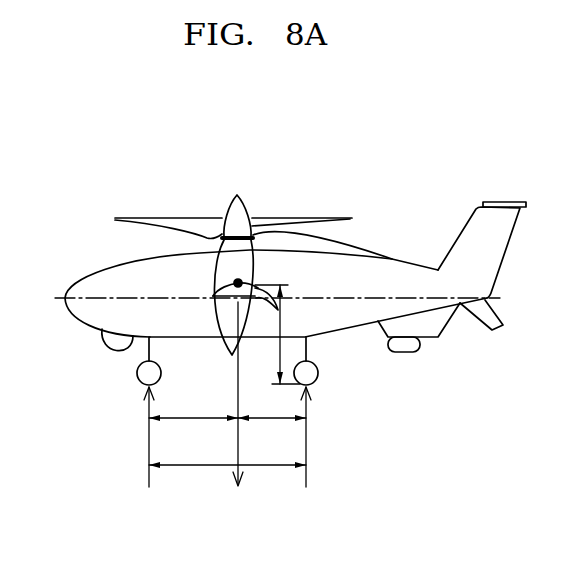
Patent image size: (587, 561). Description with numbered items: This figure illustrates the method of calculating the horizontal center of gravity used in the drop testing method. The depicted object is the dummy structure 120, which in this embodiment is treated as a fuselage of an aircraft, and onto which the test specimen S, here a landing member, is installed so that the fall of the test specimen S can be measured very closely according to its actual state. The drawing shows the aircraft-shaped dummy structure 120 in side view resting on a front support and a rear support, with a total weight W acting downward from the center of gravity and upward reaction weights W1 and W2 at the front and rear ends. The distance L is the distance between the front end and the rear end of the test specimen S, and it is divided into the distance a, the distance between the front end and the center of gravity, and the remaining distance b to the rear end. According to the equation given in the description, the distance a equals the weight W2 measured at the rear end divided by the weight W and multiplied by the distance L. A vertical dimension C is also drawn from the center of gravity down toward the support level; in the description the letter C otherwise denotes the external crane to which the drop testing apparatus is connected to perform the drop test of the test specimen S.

The dummy structure 120 is at (398, 250).
The test specimen S is at (125, 374).
The weight measured at the front end of the test specimen W is at (238, 410).
The front support reaction force W1 is at (144, 454).
The weight measured at the rear end of the test specimen W2 is at (302, 454).
The distance between the front end of the test specimen and the center of gravity a is at (193, 406).
The distance from center of gravity to rear support b is at (272, 406).
The distance between the front end and the rear end of the test specimen L is at (227, 455).
The external crane C is at (277, 334).